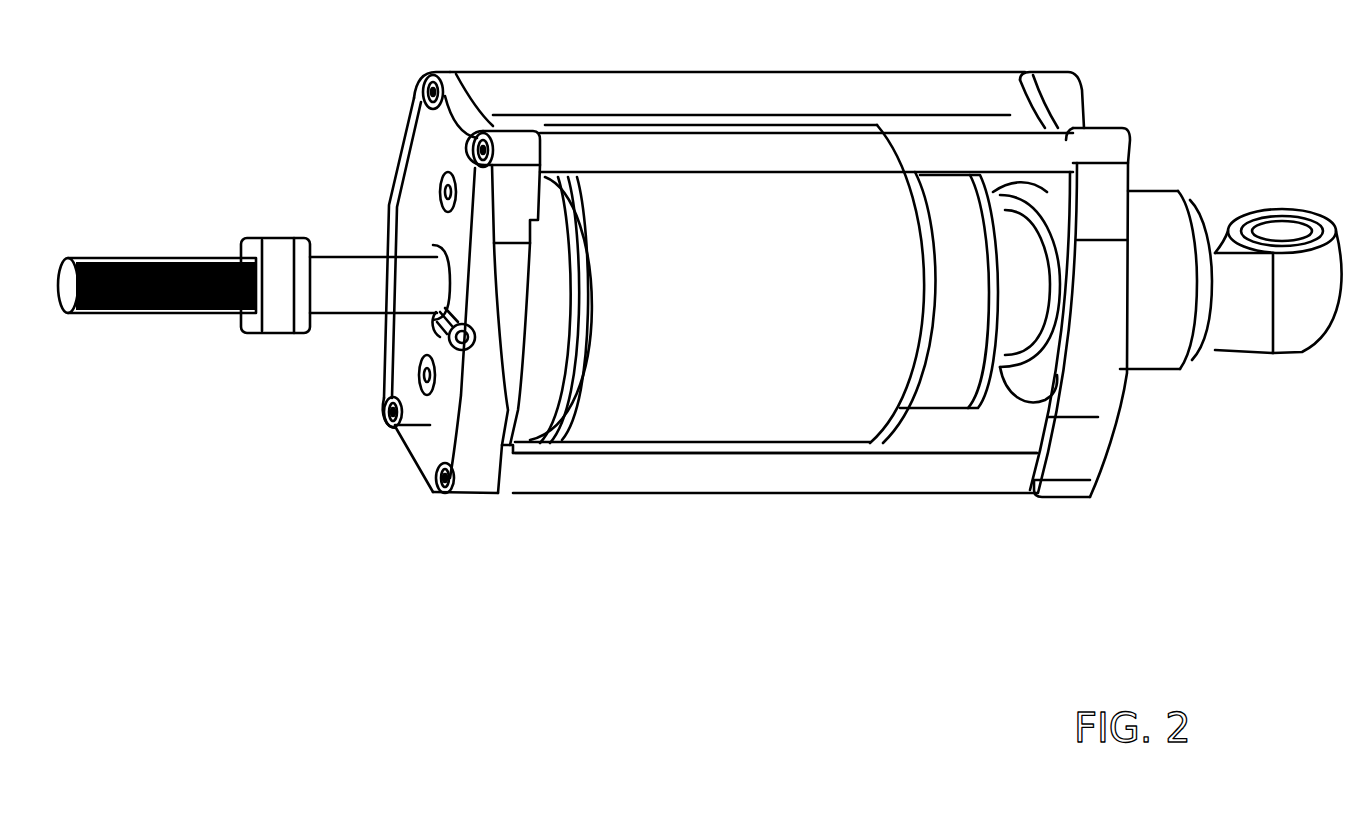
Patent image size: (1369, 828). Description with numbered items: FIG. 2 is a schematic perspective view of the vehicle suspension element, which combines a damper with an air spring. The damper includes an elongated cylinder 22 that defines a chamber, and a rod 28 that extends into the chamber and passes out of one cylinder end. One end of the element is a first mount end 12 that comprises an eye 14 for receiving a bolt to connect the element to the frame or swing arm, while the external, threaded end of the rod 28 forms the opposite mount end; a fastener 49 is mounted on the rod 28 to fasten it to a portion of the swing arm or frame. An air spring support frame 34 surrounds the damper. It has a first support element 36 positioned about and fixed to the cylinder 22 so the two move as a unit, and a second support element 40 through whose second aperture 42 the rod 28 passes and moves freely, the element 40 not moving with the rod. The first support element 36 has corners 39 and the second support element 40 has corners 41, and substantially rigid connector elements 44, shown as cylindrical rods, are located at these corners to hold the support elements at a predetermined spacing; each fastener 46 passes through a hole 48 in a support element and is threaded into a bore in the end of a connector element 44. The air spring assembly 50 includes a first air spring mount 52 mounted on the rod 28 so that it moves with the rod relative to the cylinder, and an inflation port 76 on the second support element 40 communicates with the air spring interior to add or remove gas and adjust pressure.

The first mount end 12 is at (1300, 197).
The eye 14 is at (90, 236).
The cylinder 22 is at (1150, 355).
The rod 28 is at (350, 300).
The air spring support frame 34 is at (1086, 70).
The first support element 36 is at (1092, 446).
The corner 39 is at (1052, 500).
The second support element 40 is at (442, 428).
The corner 41 is at (467, 498).
The second aperture 42 is at (432, 270).
The connector element 44 is at (705, 475).
The fastener 46 is at (390, 428).
The hole 48 is at (432, 133).
The fastener 49 is at (276, 334).
The air spring assembly 50 is at (828, 402).
The first air spring mount 52 is at (945, 385).
The inflation port 76 is at (447, 332).